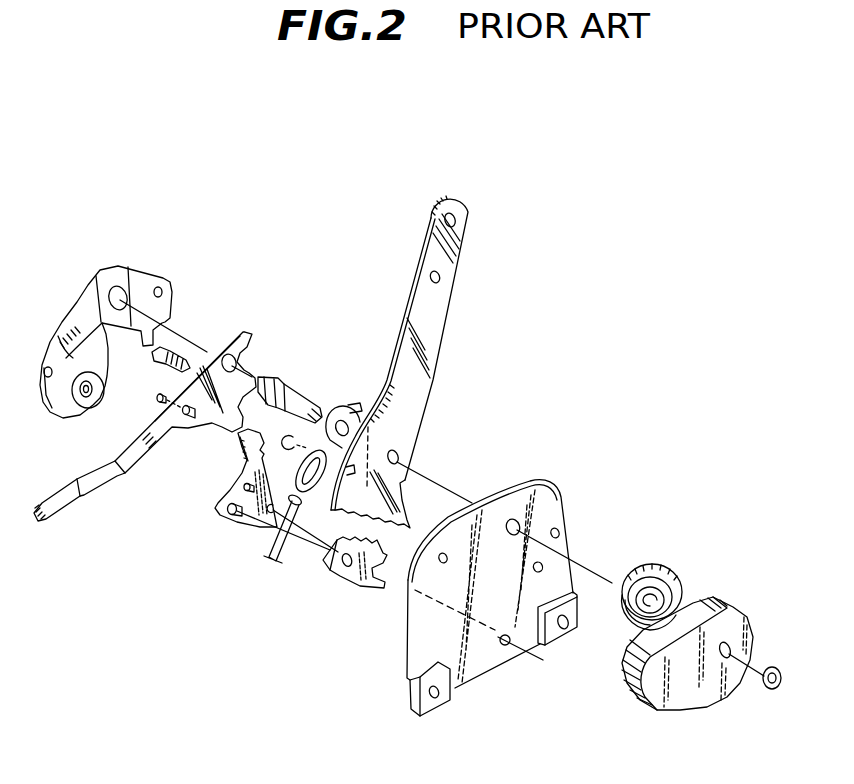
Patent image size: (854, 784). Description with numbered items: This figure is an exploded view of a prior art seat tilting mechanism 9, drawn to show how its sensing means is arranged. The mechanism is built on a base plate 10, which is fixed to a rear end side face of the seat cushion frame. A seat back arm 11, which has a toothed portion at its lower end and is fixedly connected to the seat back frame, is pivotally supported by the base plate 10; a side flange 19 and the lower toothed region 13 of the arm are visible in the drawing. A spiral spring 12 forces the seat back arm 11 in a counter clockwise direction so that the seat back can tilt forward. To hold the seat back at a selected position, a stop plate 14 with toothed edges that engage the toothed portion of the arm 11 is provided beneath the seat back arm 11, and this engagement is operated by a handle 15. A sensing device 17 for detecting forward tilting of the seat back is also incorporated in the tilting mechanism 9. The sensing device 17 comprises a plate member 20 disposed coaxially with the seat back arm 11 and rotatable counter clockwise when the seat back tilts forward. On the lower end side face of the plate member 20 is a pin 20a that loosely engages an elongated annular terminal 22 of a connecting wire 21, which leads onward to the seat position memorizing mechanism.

The tilting mechanism 9 is at (530, 452).
The base plate 10 is at (552, 506).
The seat back arm 11 is at (453, 240).
The spiral spring 12 is at (675, 590).
The sector gear 13 is at (405, 484).
The stop plate 14 is at (350, 580).
The handle 15 is at (59, 508).
The sensing device 17 is at (178, 582).
The flange 19 is at (413, 287).
The plate member 20 is at (320, 490).
The pin 20a is at (337, 483).
The connecting wire 21 is at (272, 541).
The elongated annular terminal 22 is at (304, 498).